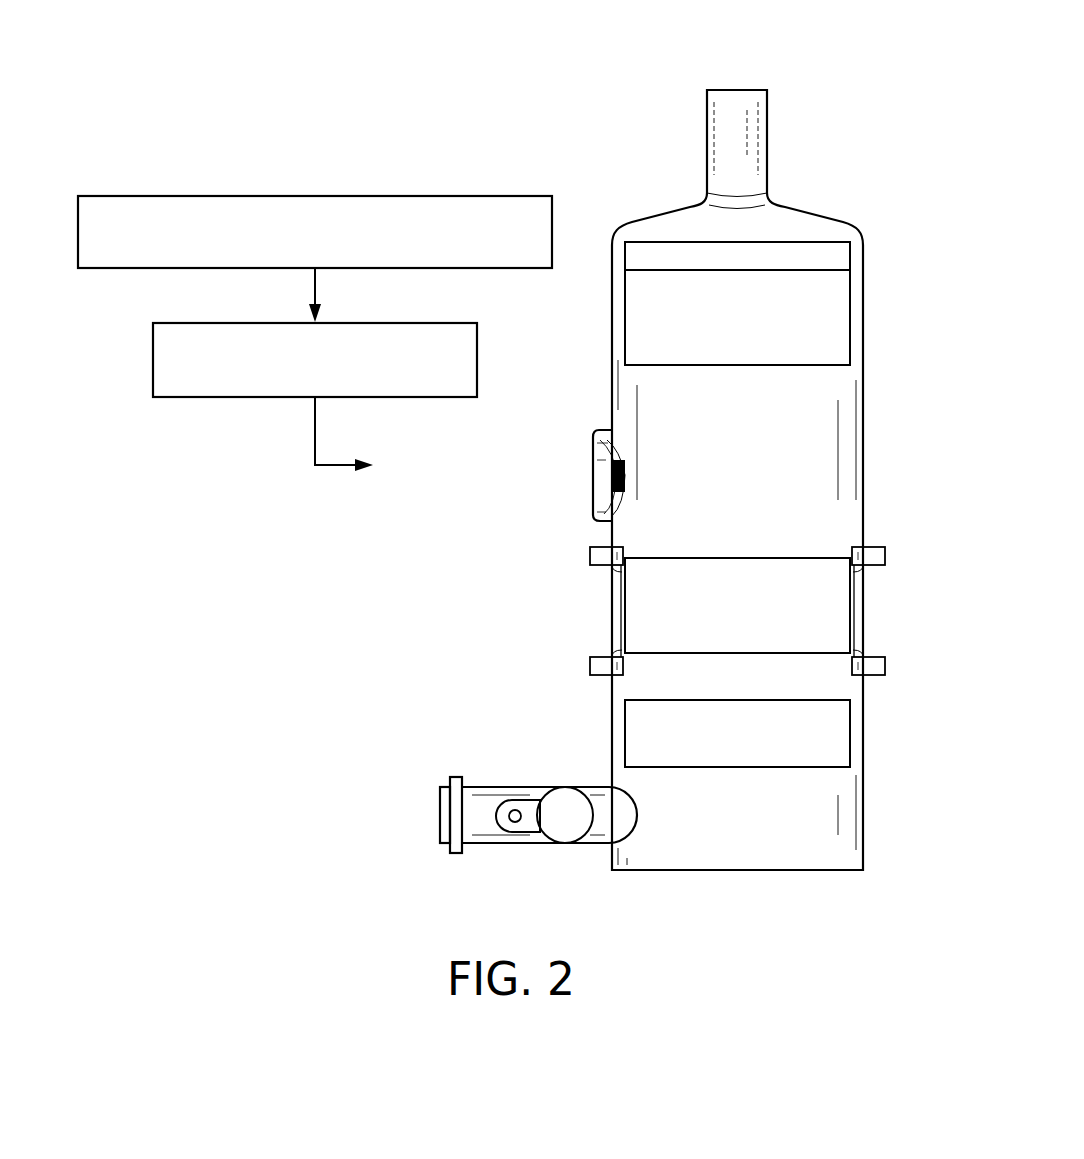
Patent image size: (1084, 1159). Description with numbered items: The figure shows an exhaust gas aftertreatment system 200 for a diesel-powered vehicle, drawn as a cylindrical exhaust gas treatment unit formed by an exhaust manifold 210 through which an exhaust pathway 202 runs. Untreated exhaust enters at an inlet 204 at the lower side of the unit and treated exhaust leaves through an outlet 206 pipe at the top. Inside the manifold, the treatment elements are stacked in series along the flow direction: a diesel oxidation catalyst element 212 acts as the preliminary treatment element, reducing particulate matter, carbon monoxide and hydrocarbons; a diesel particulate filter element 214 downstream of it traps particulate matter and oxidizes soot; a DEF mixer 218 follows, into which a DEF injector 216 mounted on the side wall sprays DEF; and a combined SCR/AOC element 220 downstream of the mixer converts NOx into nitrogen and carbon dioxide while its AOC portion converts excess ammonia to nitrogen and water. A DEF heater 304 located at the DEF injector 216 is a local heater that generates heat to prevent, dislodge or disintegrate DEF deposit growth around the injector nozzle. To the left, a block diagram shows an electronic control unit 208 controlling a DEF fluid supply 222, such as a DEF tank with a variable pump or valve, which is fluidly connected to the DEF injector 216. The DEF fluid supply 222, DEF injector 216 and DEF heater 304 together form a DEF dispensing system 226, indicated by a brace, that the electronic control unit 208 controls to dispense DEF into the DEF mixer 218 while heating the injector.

The exhaust gas aftertreatment system 200 is at (796, 72).
The exhaust pathway 202 is at (563, 600).
The inlet 204 is at (542, 880).
The outlet 206 is at (812, 147).
The electronic control unit 208 is at (418, 196).
The exhaust manifold 210 is at (864, 808).
The diesel oxidation catalyst element 212 is at (830, 733).
The diesel particulate filter element 214 is at (830, 613).
The DEF injector 216 is at (505, 503).
The DEF mixer 218 is at (830, 476).
The SCR/AOC element 220 is at (830, 310).
The DEF fluid supply 222 is at (478, 360).
The DEF dispensing system 226 is at (120, 305).
The DEF heater 304 is at (612, 488).